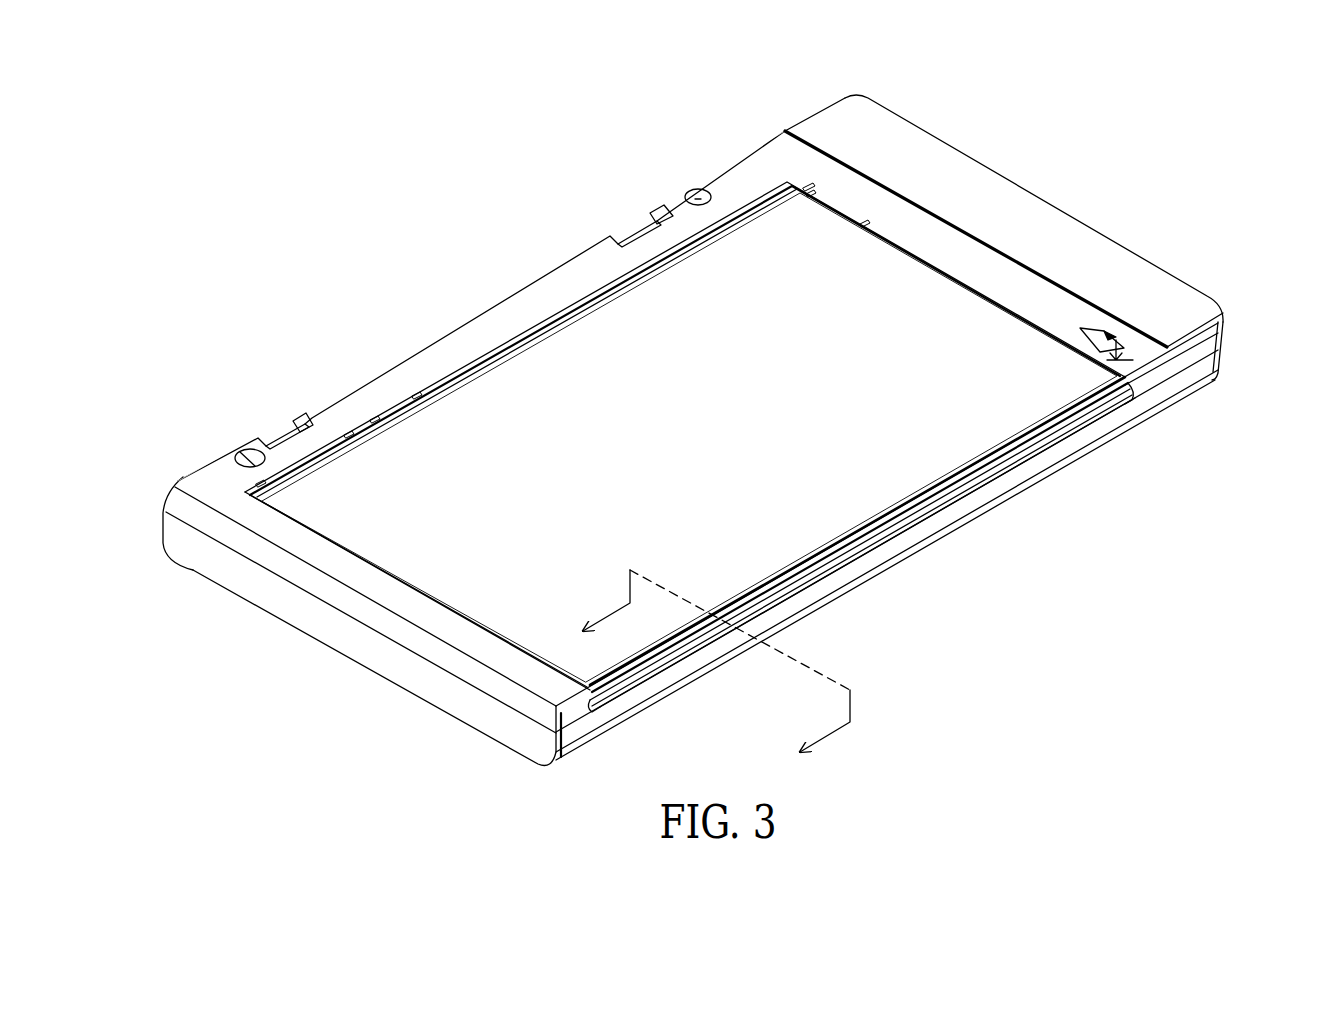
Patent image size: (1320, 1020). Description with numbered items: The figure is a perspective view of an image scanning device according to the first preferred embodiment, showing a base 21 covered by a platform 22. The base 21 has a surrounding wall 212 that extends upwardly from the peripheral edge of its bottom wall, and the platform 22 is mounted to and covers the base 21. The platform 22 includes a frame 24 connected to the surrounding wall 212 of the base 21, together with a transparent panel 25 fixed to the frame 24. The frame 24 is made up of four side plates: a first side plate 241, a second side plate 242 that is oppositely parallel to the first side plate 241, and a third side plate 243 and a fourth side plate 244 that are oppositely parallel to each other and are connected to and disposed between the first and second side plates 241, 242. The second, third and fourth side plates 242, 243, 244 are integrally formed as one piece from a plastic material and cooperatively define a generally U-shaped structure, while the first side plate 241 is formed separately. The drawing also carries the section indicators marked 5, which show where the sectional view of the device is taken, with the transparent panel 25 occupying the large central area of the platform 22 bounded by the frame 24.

The base 21 is at (1167, 392).
The platform 22 is at (460, 303).
The frame 24 is at (1093, 208).
The transparent panel 25 is at (475, 447).
The surrounding wall 212 is at (805, 607).
The first side plate 241 is at (938, 503).
The second side plate 242 is at (558, 288).
The third side plate 243 is at (340, 638).
The fourth side plate 244 is at (968, 200).
The section line of FIG. 5 is at (705, 675).